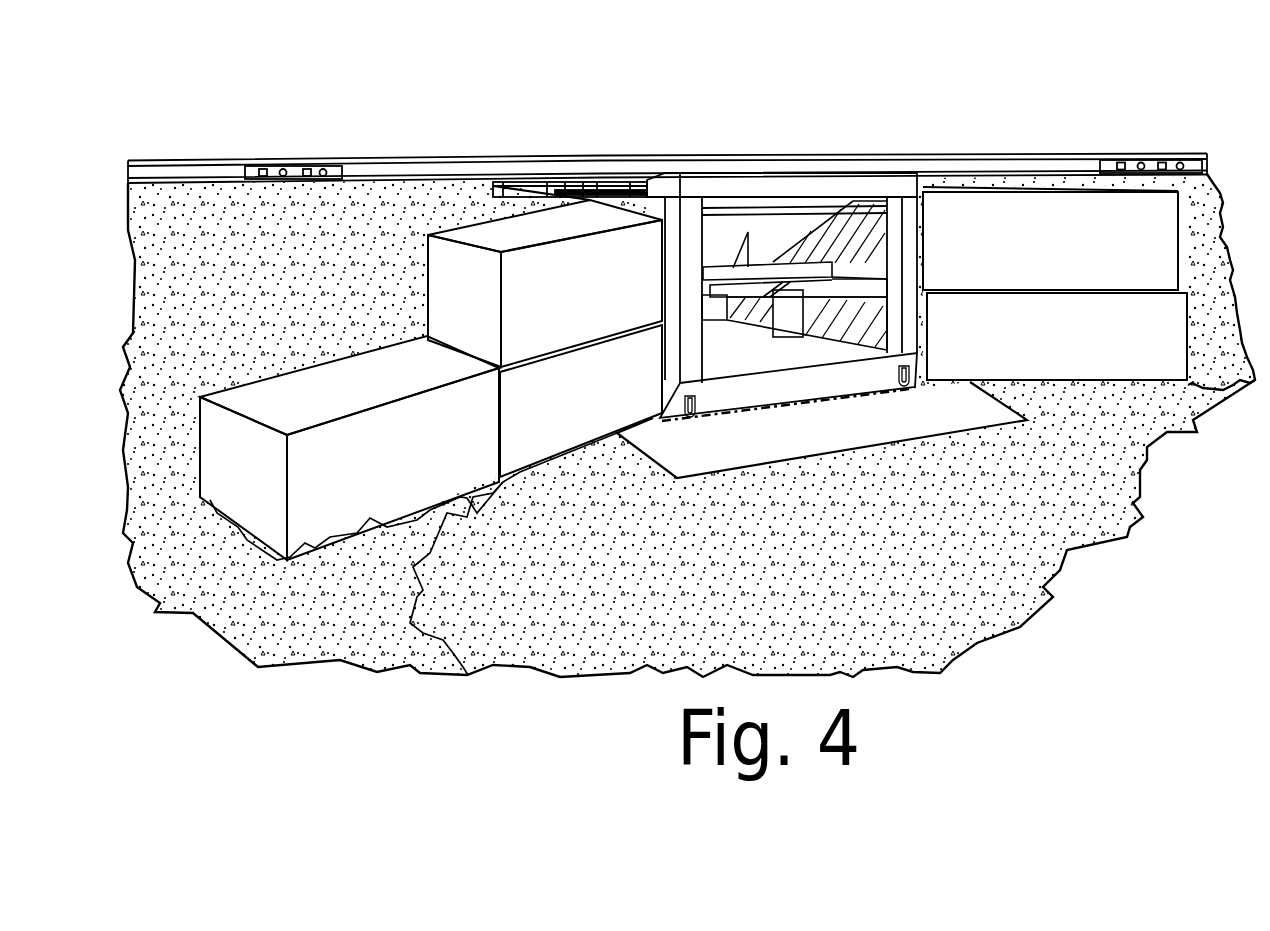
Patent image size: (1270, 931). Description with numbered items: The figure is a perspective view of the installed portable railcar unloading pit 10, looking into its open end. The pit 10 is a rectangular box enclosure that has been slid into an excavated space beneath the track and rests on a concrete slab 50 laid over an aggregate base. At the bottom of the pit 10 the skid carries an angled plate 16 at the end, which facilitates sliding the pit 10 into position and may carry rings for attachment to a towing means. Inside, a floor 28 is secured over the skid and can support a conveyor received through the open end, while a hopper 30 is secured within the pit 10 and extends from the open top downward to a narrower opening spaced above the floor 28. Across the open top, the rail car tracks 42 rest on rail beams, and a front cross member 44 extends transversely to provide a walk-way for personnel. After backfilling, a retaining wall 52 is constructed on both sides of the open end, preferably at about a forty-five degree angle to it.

The portable railcar unloading pit 10 is at (890, 187).
The angled plate 16 is at (806, 401).
The floor 28 is at (762, 365).
The hopper 30 is at (770, 235).
The rail car tracks 42 is at (410, 160).
The front cross member 44 is at (792, 180).
The concrete slab 50 is at (918, 422).
The retaining wall 52 is at (595, 320).